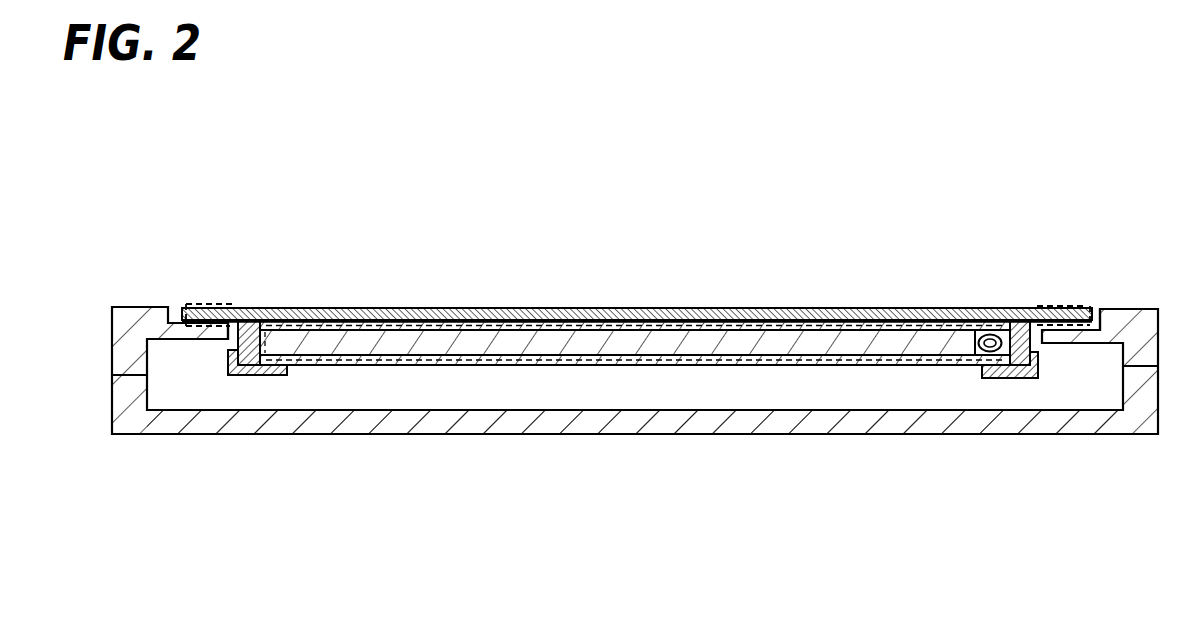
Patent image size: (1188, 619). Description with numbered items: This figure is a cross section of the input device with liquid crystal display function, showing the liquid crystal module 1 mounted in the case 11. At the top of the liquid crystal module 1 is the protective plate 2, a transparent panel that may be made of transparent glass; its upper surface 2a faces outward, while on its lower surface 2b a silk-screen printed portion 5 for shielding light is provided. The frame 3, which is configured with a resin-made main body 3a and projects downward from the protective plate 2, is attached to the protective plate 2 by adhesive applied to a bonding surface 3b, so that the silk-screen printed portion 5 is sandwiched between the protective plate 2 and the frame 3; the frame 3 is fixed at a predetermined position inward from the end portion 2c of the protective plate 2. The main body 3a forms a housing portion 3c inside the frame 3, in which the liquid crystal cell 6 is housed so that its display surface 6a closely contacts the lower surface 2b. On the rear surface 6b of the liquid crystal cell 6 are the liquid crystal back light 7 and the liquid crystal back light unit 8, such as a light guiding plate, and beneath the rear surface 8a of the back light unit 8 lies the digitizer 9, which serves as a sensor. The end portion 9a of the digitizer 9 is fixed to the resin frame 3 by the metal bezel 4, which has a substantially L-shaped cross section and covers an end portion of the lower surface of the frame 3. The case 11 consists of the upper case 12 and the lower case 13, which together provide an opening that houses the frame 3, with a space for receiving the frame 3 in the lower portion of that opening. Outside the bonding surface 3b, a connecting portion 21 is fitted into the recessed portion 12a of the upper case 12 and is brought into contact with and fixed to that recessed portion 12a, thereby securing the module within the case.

The liquid crystal module 1 is at (742, 150).
The protective plate 2 is at (496, 313).
The upper surface of cover plate 2a is at (818, 312).
The lower surface of the protective plate 2b is at (925, 323).
The end portion of the protective plate 2c is at (181, 311).
The frame 3 is at (1018, 340).
The main body 3a is at (1010, 378).
The bonding surface 3b is at (1026, 378).
The housing portion 3c is at (688, 321).
The metal bezel 4 is at (237, 376).
The silk-screen printed portion 5 is at (1055, 309).
The liquid crystal cell 6 is at (430, 325).
The display surface 6a is at (751, 321).
The rear surface of the liquid crystal cell 6b is at (751, 331).
The liquid crystal back light 7 is at (990, 334).
The liquid crystal back light unit 8 is at (376, 345).
The rear surface of the liquid crystal back light unit 8a is at (622, 356).
The digitizer 9 is at (825, 366).
The end portion of the digitizer 9a is at (983, 378).
The case 11 is at (693, 479).
The upper case 12 is at (130, 318).
The recessed portion 12a is at (178, 326).
The lower case 13 is at (438, 434).
The connecting portion 21 is at (203, 337).